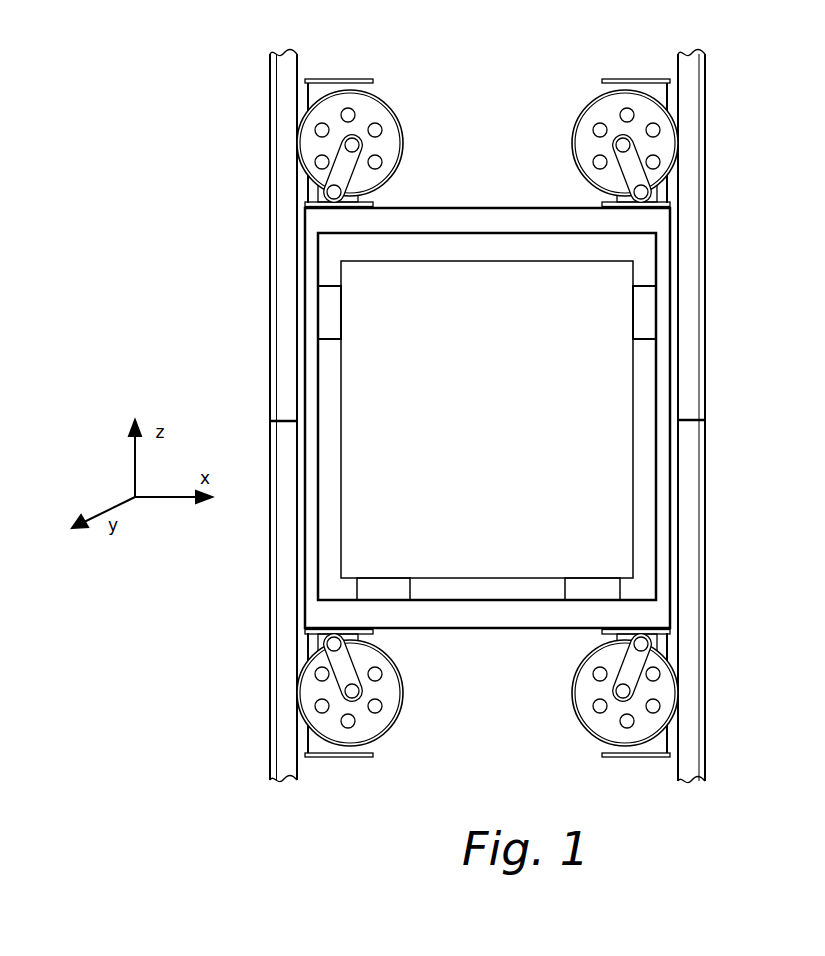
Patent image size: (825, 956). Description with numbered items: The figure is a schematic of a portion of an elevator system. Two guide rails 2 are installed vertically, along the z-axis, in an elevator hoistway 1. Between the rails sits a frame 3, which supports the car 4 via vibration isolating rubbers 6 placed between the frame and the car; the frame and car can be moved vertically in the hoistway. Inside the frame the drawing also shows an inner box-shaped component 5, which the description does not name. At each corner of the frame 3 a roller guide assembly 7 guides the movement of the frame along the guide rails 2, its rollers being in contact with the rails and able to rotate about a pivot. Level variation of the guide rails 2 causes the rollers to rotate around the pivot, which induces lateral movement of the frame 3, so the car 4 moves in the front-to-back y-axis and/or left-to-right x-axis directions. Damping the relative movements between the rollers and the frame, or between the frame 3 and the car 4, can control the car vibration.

The elevator hoistway 1 is at (761, 506).
The guide rails 2 is at (277, 298).
The frame 3 is at (553, 193).
The car 4 is at (459, 220).
The elevator car 5 is at (447, 560).
The vibration isolating rubbers 6 is at (592, 590).
The roller guide assembly 7 is at (585, 747).